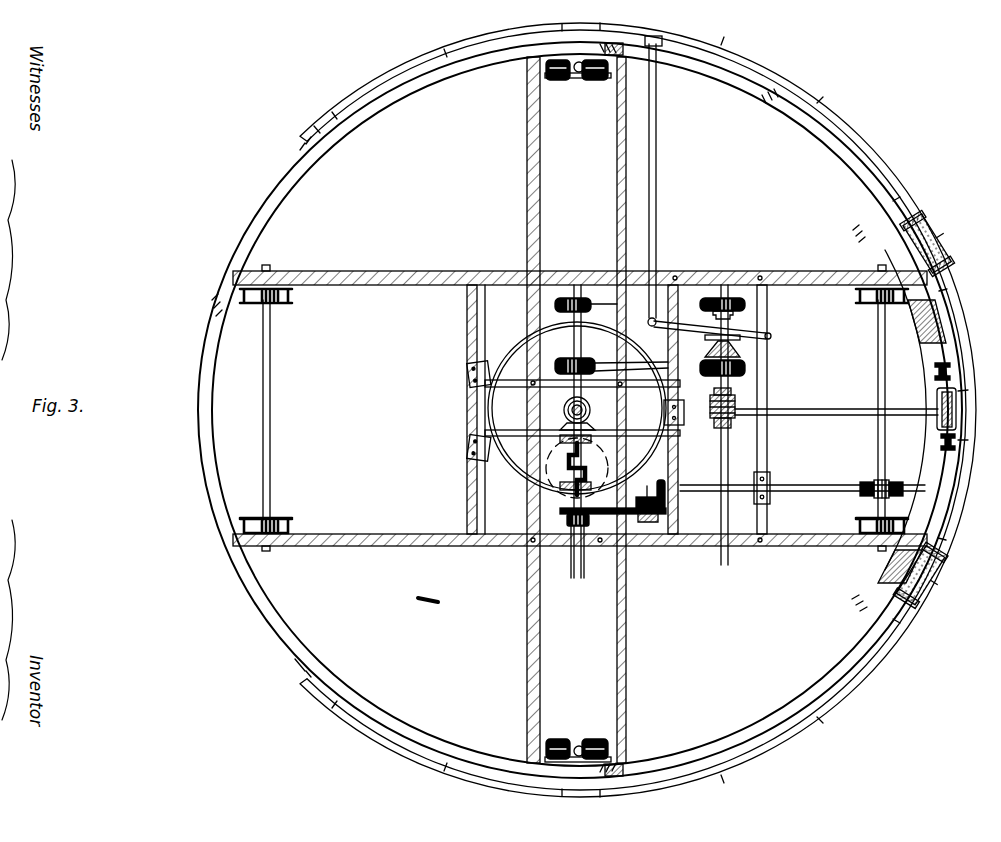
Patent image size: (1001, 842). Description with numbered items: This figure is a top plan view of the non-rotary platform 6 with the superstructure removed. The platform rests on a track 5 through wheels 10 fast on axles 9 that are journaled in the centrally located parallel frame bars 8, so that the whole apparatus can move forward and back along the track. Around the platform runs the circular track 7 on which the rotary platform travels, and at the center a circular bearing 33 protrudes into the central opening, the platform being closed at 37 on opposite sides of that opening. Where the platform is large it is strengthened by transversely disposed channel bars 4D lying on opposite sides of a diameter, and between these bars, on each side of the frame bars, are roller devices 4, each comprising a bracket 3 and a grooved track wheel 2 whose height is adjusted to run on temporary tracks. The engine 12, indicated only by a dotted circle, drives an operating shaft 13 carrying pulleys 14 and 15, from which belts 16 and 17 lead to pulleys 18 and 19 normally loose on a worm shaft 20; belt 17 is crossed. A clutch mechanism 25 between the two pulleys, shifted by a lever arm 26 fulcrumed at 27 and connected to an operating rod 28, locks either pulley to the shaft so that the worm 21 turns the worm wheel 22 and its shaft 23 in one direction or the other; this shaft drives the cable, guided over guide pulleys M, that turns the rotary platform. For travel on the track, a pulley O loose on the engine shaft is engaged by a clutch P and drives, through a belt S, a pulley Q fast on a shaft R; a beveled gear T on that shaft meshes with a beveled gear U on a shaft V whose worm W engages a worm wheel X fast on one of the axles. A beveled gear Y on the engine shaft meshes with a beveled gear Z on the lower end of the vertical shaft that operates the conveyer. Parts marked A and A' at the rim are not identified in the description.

The grooved rollers or track wheels 2 is at (547, 66).
The brackets 3 is at (580, 742).
The roller devices 4 is at (580, 80).
The track 5 is at (618, 395).
The non-rotary platform 6 is at (580, 408).
The circular track 7 is at (805, 138).
The parallel frame bars 8 is at (715, 283).
The axles 9 is at (271, 391).
The wheels 10 is at (286, 301).
The engine 12 is at (529, 520).
The operating shaft 13 is at (550, 345).
The pulley 14 is at (572, 297).
The pulley 15 is at (592, 358).
The belt 16 is at (692, 300).
The crossed belt 17 is at (637, 347).
The pulley 18 is at (740, 298).
The pulley 19 is at (744, 368).
The worm shaft 20 is at (721, 441).
The worm 21 is at (735, 418).
The worm wheel 22 is at (732, 392).
The worm wheel shaft 23 is at (849, 416).
The clutch mechanism 25 is at (733, 348).
The lever arm 26 is at (742, 332).
The fulcrum 27 is at (773, 336).
The operating rod 28 is at (657, 206).
The circular bearing 33 is at (506, 476).
The closed platform portion 37 is at (564, 404).
The channel bars 4D is at (527, 645).
The rail blocks A is at (926, 409).
The outer rail band A' is at (638, 410).
The guide pulleys M is at (950, 364).
The pulley O is at (570, 523).
The clutch P is at (577, 578).
The pulley Q is at (652, 522).
The shaft R is at (650, 516).
The belt S is at (581, 488).
The beveled gear T is at (647, 485).
The beveled gear U is at (667, 486).
The shaft V is at (779, 494).
The worm W is at (886, 480).
The worm wheel X is at (830, 484).
The beveled gear Y is at (562, 433).
The beveled gear Z is at (564, 418).